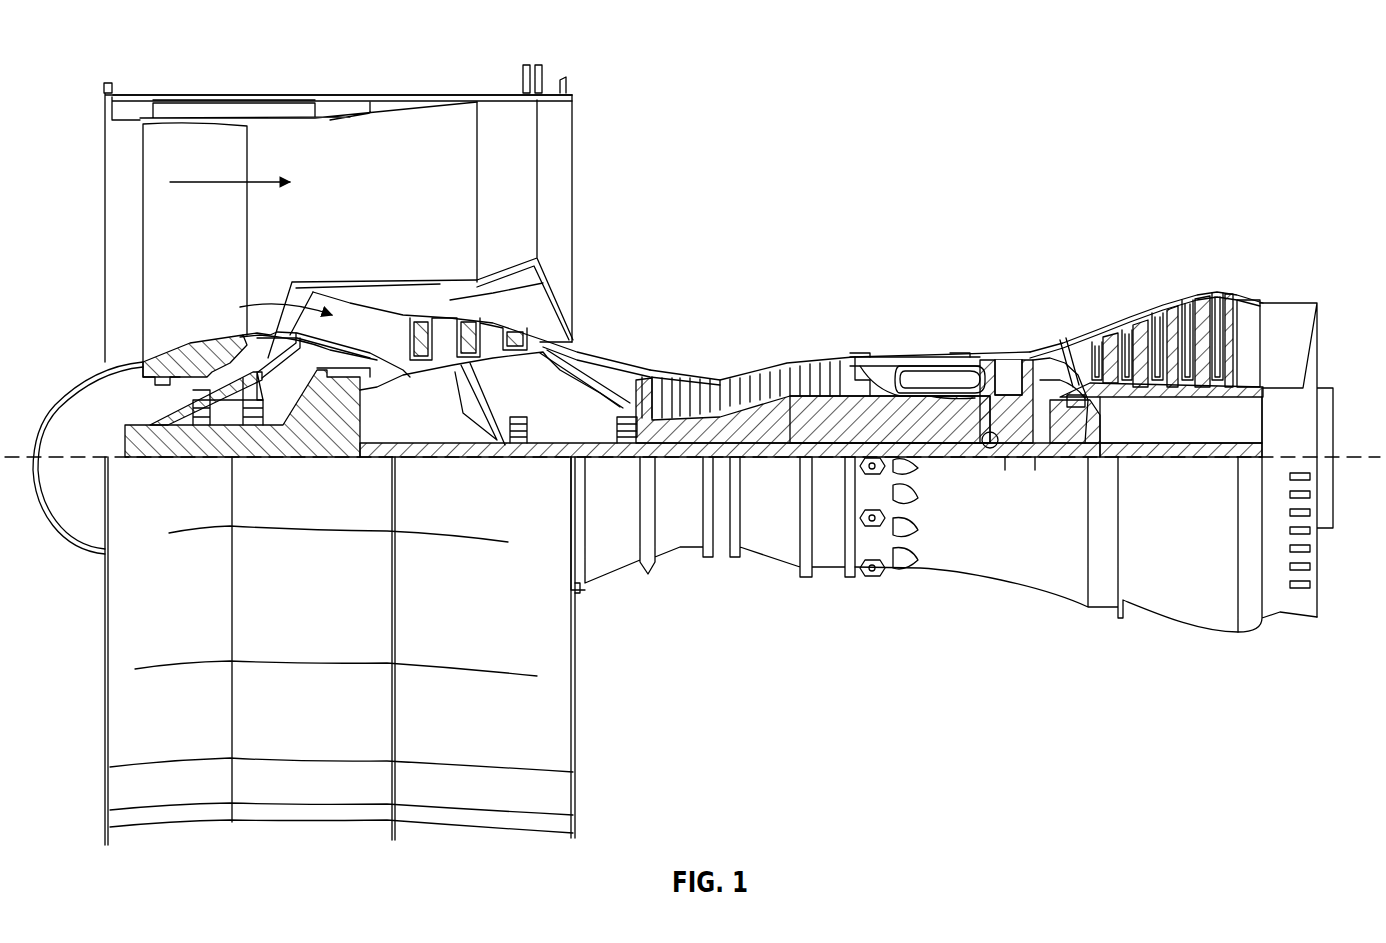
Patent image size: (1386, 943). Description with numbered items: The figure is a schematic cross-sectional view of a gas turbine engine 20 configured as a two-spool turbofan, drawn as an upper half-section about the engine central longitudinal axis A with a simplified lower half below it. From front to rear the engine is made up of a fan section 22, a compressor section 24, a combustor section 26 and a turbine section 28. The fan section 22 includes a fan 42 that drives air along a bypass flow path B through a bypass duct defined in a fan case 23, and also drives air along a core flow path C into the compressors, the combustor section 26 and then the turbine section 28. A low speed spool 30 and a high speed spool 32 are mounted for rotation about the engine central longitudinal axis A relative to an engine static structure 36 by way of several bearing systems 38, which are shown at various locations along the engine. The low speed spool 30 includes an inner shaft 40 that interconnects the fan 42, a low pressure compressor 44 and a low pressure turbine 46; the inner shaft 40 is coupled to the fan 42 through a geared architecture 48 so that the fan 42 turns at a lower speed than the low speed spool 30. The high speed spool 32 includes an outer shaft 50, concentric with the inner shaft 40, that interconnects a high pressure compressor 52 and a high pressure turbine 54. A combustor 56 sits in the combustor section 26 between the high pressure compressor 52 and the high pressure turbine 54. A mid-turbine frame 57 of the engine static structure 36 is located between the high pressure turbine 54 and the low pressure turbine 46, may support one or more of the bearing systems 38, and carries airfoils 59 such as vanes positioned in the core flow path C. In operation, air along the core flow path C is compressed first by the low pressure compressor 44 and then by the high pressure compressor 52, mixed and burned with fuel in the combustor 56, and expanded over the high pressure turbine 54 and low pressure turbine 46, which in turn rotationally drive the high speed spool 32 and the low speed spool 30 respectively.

The gas turbine engine 20 is at (1182, 140).
The fan section 22 is at (292, 78).
The fan case 23 is at (345, 100).
The compressor section 24 is at (627, 338).
The combustor section 26 is at (898, 290).
The turbine section 28 is at (1093, 290).
The low speed spool 30 is at (778, 460).
The high speed spool 32 is at (822, 418).
The engine static structure 36 is at (828, 574).
The bearing systems 38 is at (533, 458).
The inner shaft 40 is at (603, 455).
The fan 42 is at (206, 227).
The low pressure compressor 44 is at (487, 335).
The low pressure turbine 46 is at (1170, 320).
The geared architecture 48 is at (318, 458).
The outer shaft 50 is at (993, 458).
The high pressure compressor 52 is at (760, 372).
The high pressure turbine 54 is at (1003, 352).
The combustor 56 is at (935, 383).
The mid-turbine frame 57 is at (1063, 346).
The airfoils 59 is at (1110, 403).
The engine central longitudinal axis A is at (1352, 455).
The bypass flow path B is at (232, 182).
The core flow path C is at (226, 312).